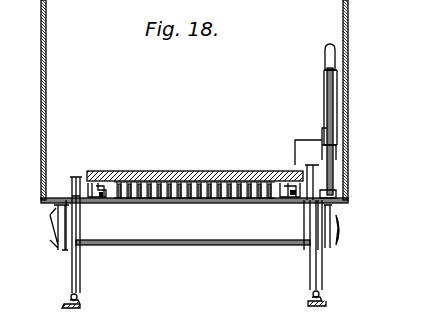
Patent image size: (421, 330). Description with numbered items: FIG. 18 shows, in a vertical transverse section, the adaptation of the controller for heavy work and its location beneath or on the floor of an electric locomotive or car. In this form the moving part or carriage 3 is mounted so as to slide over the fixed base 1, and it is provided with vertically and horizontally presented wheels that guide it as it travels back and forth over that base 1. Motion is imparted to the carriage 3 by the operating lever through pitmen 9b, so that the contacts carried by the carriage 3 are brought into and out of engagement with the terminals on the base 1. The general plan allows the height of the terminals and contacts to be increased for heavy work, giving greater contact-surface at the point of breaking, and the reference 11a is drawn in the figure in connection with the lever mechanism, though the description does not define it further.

The fixed base 1 is at (174, 203).
The carriage 3 is at (154, 171).
The pitmen 9b is at (338, 162).
The pin 11a is at (326, 97).